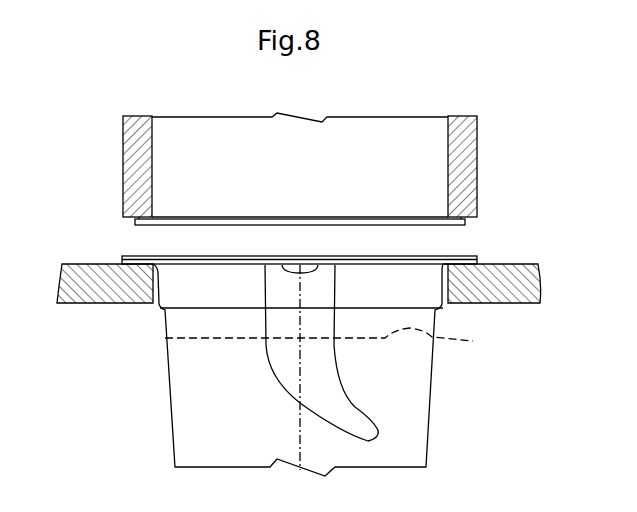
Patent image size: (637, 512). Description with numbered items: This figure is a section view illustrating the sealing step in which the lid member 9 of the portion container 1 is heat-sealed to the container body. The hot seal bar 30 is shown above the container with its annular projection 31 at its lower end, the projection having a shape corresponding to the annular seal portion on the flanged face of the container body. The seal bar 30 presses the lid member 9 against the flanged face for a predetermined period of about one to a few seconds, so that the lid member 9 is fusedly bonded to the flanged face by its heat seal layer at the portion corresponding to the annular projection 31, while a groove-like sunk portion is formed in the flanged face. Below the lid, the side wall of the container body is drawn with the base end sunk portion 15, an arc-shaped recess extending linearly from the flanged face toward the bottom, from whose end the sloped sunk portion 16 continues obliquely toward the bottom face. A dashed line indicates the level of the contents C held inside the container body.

The portion container 1 is at (123, 365).
The lid member 9 is at (466, 256).
The base end sunk portion 15 is at (323, 290).
The sloped sunk portion 16 is at (342, 412).
The seal bar 30 is at (127, 183).
The annular projection 31 is at (135, 224).
The contents C is at (329, 343).